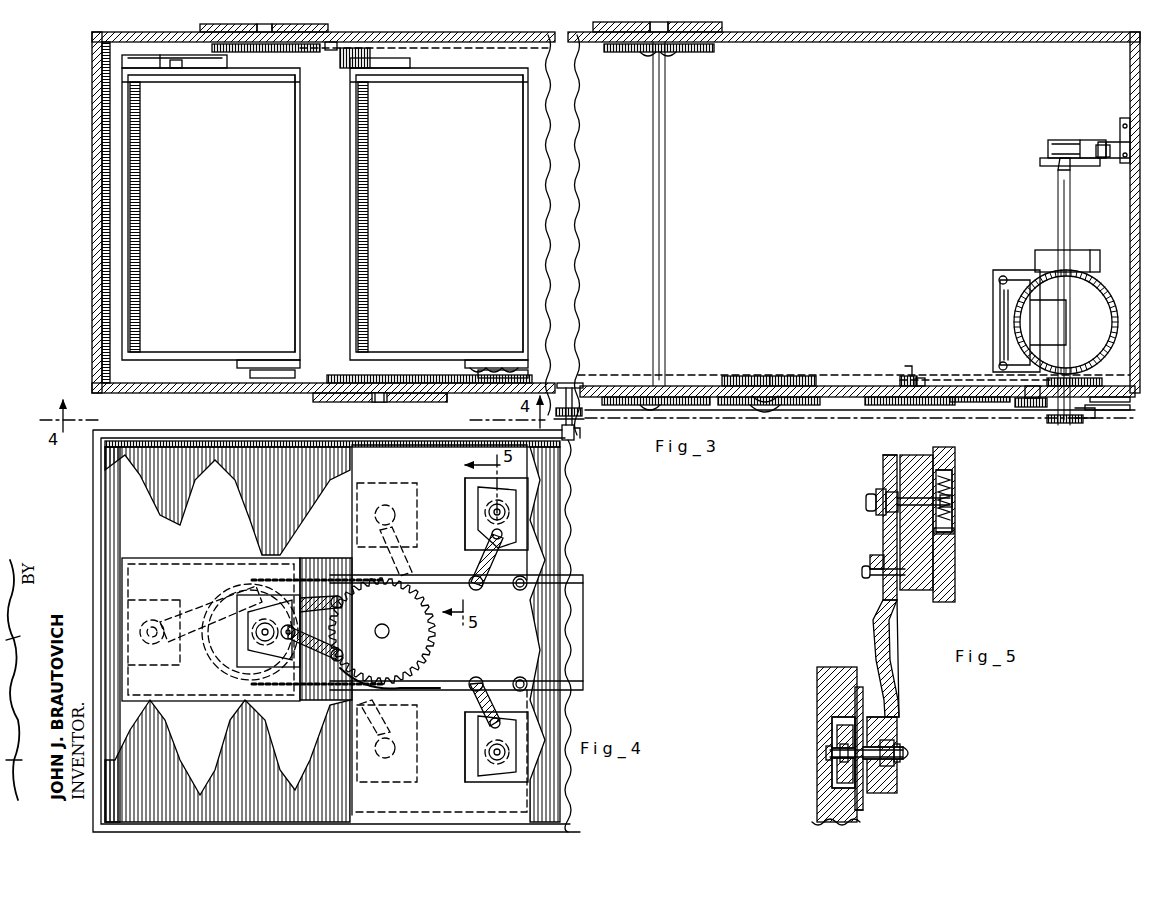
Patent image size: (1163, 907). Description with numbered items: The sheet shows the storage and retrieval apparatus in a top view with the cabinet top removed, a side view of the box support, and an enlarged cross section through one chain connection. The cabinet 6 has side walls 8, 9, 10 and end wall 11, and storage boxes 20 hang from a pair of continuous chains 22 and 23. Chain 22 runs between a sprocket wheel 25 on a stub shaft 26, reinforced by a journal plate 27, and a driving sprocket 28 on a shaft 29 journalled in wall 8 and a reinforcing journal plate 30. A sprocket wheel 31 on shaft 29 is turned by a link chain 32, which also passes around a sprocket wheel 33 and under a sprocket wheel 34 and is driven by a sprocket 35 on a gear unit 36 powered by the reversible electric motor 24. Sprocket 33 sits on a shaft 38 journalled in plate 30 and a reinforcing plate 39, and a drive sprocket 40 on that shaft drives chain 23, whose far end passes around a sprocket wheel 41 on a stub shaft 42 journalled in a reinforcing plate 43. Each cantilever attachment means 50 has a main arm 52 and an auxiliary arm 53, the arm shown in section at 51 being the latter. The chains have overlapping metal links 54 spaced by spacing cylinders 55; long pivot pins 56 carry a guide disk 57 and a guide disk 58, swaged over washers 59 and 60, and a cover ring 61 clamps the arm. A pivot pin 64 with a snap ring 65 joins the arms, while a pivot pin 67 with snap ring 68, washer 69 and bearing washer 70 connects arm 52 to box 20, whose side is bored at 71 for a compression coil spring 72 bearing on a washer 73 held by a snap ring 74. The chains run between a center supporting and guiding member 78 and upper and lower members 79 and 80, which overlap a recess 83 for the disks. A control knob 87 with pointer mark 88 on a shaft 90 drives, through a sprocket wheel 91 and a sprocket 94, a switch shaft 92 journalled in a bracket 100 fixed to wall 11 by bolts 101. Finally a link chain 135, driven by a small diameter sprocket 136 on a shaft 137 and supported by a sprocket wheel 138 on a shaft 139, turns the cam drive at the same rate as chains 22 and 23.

In FIG. 3, the cabinet 6 is at (1138, 218).
In FIG. 3, the side wall 8 is at (218, 393).
In FIG. 5, the side wall 8 is at (817, 812).
In FIG. 3, the side wall 9 is at (92, 170).
In FIG. 3, the side wall 10 is at (1138, 36).
In FIG. 3, the end wall 11 is at (1133, 82).
In FIG. 3, the storage box 20 is at (350, 170).
In FIG. 4, the storage box 20 is at (165, 558).
In FIG. 5, the storage box 20 is at (955, 578).
In FIG. 3, the continuous chain 22 is at (700, 375).
In FIG. 4, the continuous chain 22 is at (442, 678).
In FIG. 3, the continuous chain 23 is at (520, 50).
In FIG. 3, the reversible electric motor 24 is at (1108, 306).
In FIG. 3, the sprocket wheel 25 is at (414, 378).
In FIG. 4, the sprocket wheel 25 is at (430, 626).
In FIG. 3, the stub shaft 26 is at (378, 402).
In FIG. 3, the journal plate 27 is at (432, 400).
In FIG. 3, the driving sprocket 28 is at (800, 376).
In FIG. 3, the shaft 29 is at (767, 376).
In FIG. 3, the reinforcing journal plate 30 is at (842, 386).
In FIG. 3, the sprocket wheel 31 is at (800, 405).
In FIG. 3, the link chain 32 is at (822, 414).
In FIG. 3, the sprocket wheel 33 is at (607, 405).
In FIG. 3, the sprocket wheel 34 is at (912, 405).
In FIG. 3, the sprocket 35 is at (1030, 408).
In FIG. 3, the gear unit 36 is at (992, 300).
In FIG. 3, the shaft 38 is at (665, 292).
In FIG. 3, the reinforcing plate 39 is at (718, 33).
In FIG. 3, the drive sprocket 40 is at (626, 53).
In FIG. 3, the sprocket wheel 41 is at (330, 58).
In FIG. 4, the sprocket wheel 41 is at (305, 667).
In FIG. 3, the stub shaft 42 is at (270, 52).
In FIG. 3, the reinforcing plate 43 is at (327, 48).
In FIG. 3, the cantilever attachment means 50 is at (280, 380).
In FIG. 4, the cantilever attachment means 50 is at (545, 558).
In FIG. 5, the cantilever attachment means 50 is at (905, 670).
In FIG. 3, the latch in alternate position 51 is at (120, 49).
In FIG. 4, the latch in alternate position 51 is at (356, 546).
In FIG. 4, the main arm 52 is at (370, 530).
In FIG. 5, the main arm 52 is at (897, 597).
In FIG. 4, the auxiliary arm 53 is at (480, 557).
In FIG. 5, the auxiliary arm 53 is at (878, 597).
In FIG. 4, the metal links 54 is at (337, 596).
In FIG. 5, the metal links 54 is at (842, 748).
In FIG. 5, the spacing cylinders 55 is at (897, 740).
In FIG. 4, the long pivot pin 56 is at (480, 677).
In FIG. 5, the long pivot pin 56 is at (938, 765).
In FIG. 5, the guide disk 57 is at (838, 781).
In FIG. 5, the guide disk 58 is at (878, 793).
In FIG. 5, the washer 59 is at (828, 752).
In FIG. 5, the washer 60 is at (913, 753).
In FIG. 3, the cover ring 61 is at (237, 364).
In FIG. 4, the cover ring 61 is at (523, 590).
In FIG. 5, the cover ring 61 is at (898, 723).
In FIG. 5, the pivot pin 64 is at (862, 572).
In FIG. 5, the snap ring 65 is at (870, 560).
In FIG. 3, the pivot pin 67 is at (178, 70).
In FIG. 4, the pivot pin 67 is at (376, 510).
In FIG. 5, the pivot pin 67 is at (866, 503).
In FIG. 5, the snap ring 68 is at (868, 494).
In FIG. 5, the washer 69 is at (878, 478).
In FIG. 5, the bearing washer 70 is at (888, 462).
In FIG. 5, the bore 71 is at (955, 540).
In FIG. 5, the compression coil spring 72 is at (956, 531).
In FIG. 5, the washer 73 is at (950, 484).
In FIG. 5, the snap ring 74 is at (952, 503).
In FIG. 4, the center supporting and guiding member 78 is at (576, 646).
In FIG. 5, the center supporting and guiding member 78 is at (862, 810).
In FIG. 4, the upper supporting and guiding member 79 is at (583, 579).
In FIG. 5, the upper supporting and guiding member 79 is at (858, 687).
In FIG. 4, the lower supporting and guiding member 80 is at (583, 686).
In FIG. 5, the recess 83 is at (834, 774).
In FIG. 3, the control knob 87 is at (580, 432).
In FIG. 3, the pointer mark 88 is at (562, 430).
In FIG. 3, the shaft 90 is at (568, 383).
In FIG. 3, the sprocket wheel 91 is at (556, 405).
In FIG. 3, the switch shaft 92 is at (1082, 420).
In FIG. 3, the sprocket 94 is at (1065, 424).
In FIG. 3, the bracket 100 is at (1090, 140).
In FIG. 3, the bolts 101 is at (1120, 120).
In FIG. 3, the link chain 135 is at (968, 378).
In FIG. 3, the small diameter sprocket 136 is at (921, 377).
In FIG. 3, the shaft 137 is at (905, 386).
In FIG. 3, the sprocket wheel 138 is at (1105, 398).
In FIG. 3, the shaft 139 is at (1100, 410).